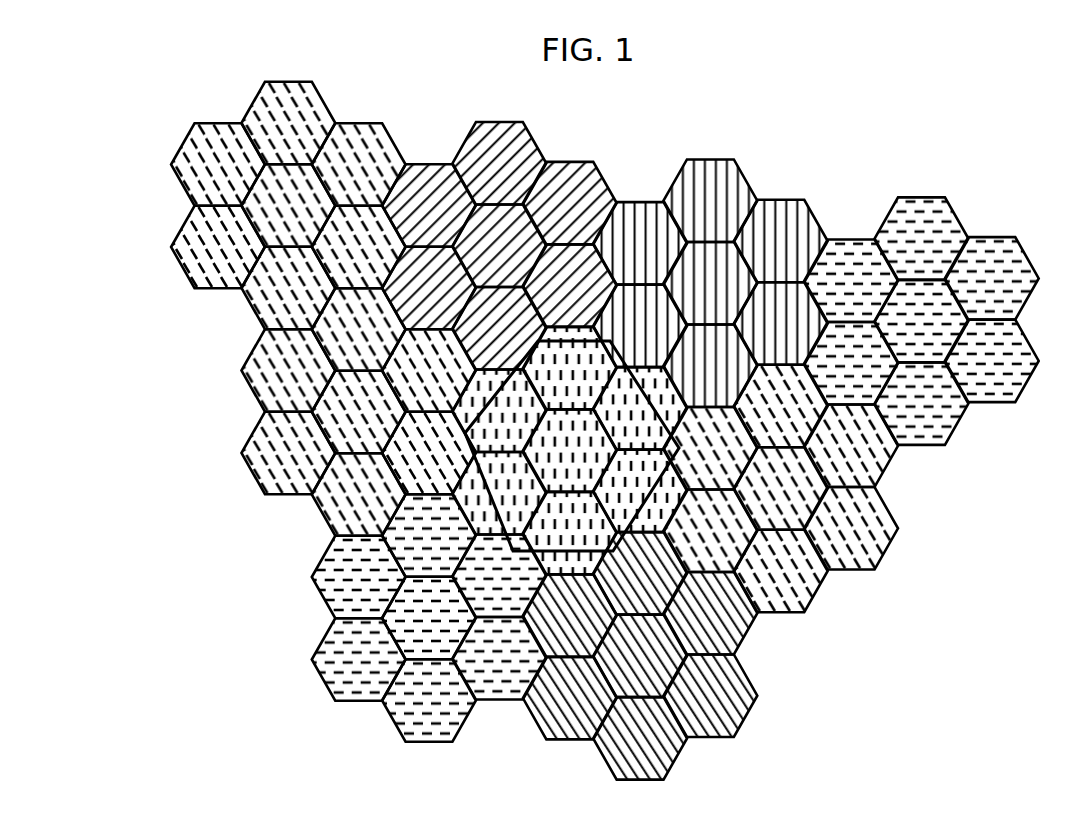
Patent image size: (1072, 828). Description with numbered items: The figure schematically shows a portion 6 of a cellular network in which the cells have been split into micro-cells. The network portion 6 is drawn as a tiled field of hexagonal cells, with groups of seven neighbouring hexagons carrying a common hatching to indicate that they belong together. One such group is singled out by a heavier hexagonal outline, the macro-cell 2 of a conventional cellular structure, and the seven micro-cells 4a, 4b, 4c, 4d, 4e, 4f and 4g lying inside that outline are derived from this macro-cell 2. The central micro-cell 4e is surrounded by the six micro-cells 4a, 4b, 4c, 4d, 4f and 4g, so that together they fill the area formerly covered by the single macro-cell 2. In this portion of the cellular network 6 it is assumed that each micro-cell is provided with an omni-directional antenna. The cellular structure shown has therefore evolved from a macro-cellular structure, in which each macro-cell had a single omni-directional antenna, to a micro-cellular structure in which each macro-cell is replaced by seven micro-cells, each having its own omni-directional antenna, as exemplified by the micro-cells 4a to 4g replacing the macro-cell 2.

The macro-cell 2 is at (570, 367).
The micro-cell 4a is at (627, 420).
The micro-cell 4b is at (559, 382).
The micro-cell 4c is at (490, 420).
The micro-cell 4d is at (490, 496).
The micro-cell 4e is at (560, 458).
The micro-cell 4f is at (559, 536).
The micro-cell 4g is at (627, 496).
The portion of a cellular network 6 is at (933, 181).